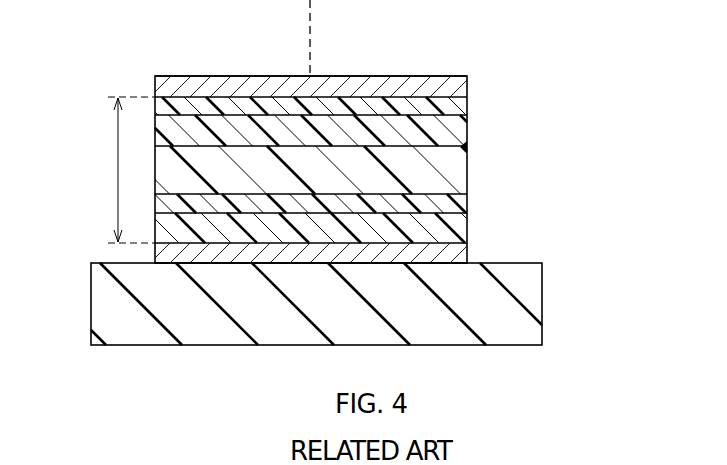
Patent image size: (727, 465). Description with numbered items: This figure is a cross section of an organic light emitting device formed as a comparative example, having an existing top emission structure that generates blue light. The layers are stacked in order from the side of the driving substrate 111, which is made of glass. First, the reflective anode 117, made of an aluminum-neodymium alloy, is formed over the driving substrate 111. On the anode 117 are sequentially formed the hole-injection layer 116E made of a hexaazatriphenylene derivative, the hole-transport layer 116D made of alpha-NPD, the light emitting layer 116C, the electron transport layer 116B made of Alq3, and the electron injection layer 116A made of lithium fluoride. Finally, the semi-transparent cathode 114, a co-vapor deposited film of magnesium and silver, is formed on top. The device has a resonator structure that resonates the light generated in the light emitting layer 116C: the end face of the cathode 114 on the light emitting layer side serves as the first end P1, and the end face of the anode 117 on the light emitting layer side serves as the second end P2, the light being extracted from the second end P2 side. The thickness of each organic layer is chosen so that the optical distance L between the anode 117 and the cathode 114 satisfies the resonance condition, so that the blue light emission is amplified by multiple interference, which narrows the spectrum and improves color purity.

The driving substrate 111 is at (533, 303).
The cathode 114 is at (468, 82).
The electron injection layer 116A is at (468, 105).
The electron transport layer 116B is at (462, 131).
The light emitting layer 116C is at (462, 166).
The hole-transport layer 116D is at (462, 202).
The hole-injection layer 116E is at (462, 225).
The anode 117 is at (462, 250).
The first end P1 is at (190, 243).
The second end P2 is at (190, 95).
The optical distance L is at (127, 170).